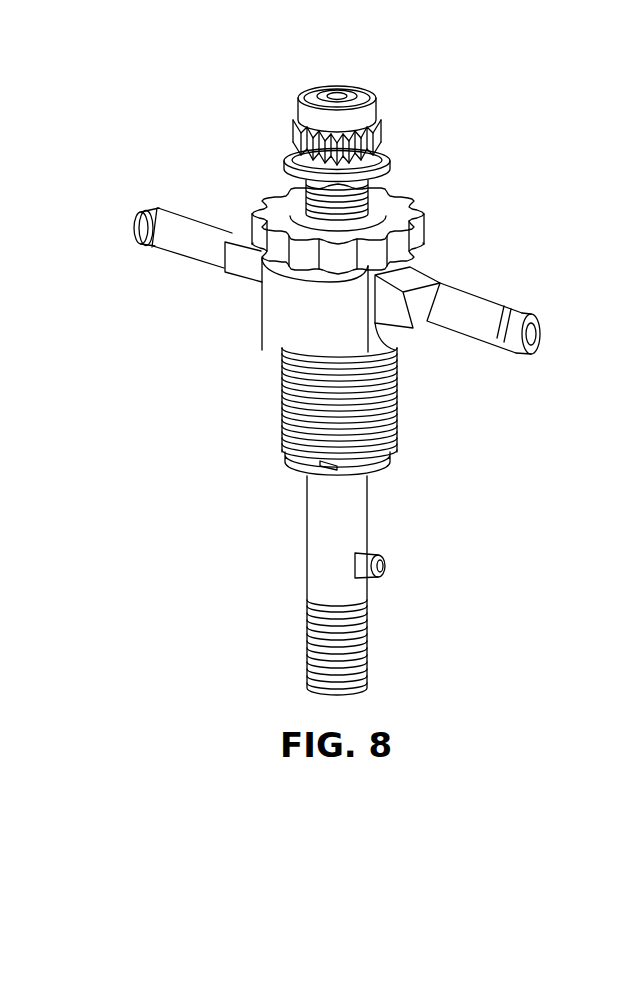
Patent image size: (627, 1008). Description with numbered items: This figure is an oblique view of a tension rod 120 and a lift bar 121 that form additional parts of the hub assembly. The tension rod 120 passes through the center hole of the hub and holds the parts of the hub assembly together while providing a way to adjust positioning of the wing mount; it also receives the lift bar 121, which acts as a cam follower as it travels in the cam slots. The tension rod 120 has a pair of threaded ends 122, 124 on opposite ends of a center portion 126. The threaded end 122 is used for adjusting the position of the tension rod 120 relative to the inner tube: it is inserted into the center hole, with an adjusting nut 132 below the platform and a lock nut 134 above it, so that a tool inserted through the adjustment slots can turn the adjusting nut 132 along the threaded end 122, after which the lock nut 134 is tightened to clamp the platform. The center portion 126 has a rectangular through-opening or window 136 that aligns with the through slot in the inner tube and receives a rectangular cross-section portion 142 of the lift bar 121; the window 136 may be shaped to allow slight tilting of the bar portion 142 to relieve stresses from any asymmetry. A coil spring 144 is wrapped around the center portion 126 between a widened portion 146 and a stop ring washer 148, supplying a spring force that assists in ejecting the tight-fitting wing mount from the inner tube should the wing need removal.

The tension rod 120 is at (451, 170).
The lift bar 121 is at (455, 285).
The threaded end 122 is at (273, 191).
The threaded end 124 is at (355, 642).
The center portion 126 is at (348, 495).
The adjusting nut 132 is at (419, 216).
The lock nut 134 is at (377, 99).
The through-opening or window 136 is at (393, 345).
The rectangular cross-section portion 142 is at (237, 267).
The coil spring 144 is at (283, 406).
The widened portion 146 is at (299, 333).
The stop ring washer 148 is at (292, 466).